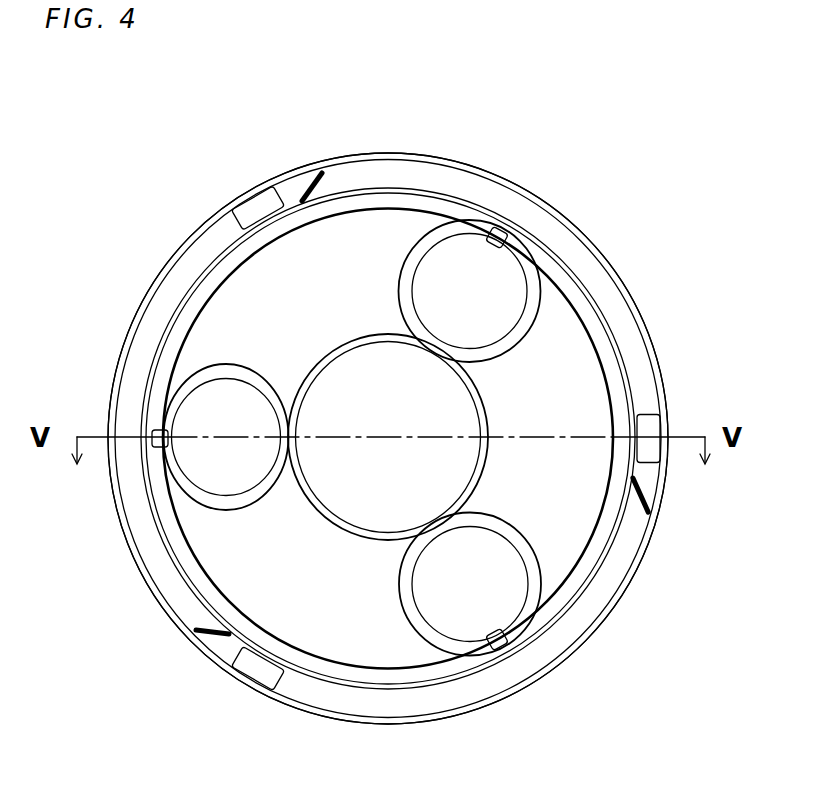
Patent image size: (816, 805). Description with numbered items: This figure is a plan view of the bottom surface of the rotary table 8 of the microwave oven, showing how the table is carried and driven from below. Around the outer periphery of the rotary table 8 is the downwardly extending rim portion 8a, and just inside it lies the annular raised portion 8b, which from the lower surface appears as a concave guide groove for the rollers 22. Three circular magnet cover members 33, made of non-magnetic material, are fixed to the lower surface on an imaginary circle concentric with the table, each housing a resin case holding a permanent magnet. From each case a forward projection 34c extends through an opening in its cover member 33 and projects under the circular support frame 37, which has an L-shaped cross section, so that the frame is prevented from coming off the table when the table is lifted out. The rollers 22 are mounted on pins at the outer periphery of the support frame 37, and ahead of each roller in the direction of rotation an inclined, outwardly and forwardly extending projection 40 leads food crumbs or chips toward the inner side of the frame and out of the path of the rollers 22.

The rotary table 8 is at (448, 178).
The rim portion 8a is at (133, 562).
The annular raised portion 8b is at (172, 290).
The roller 22 is at (263, 198).
The magnet cover member 33 is at (508, 290).
The forward projection 34c is at (506, 228).
The circular support frame 37 is at (197, 595).
The projection 40 is at (317, 182).